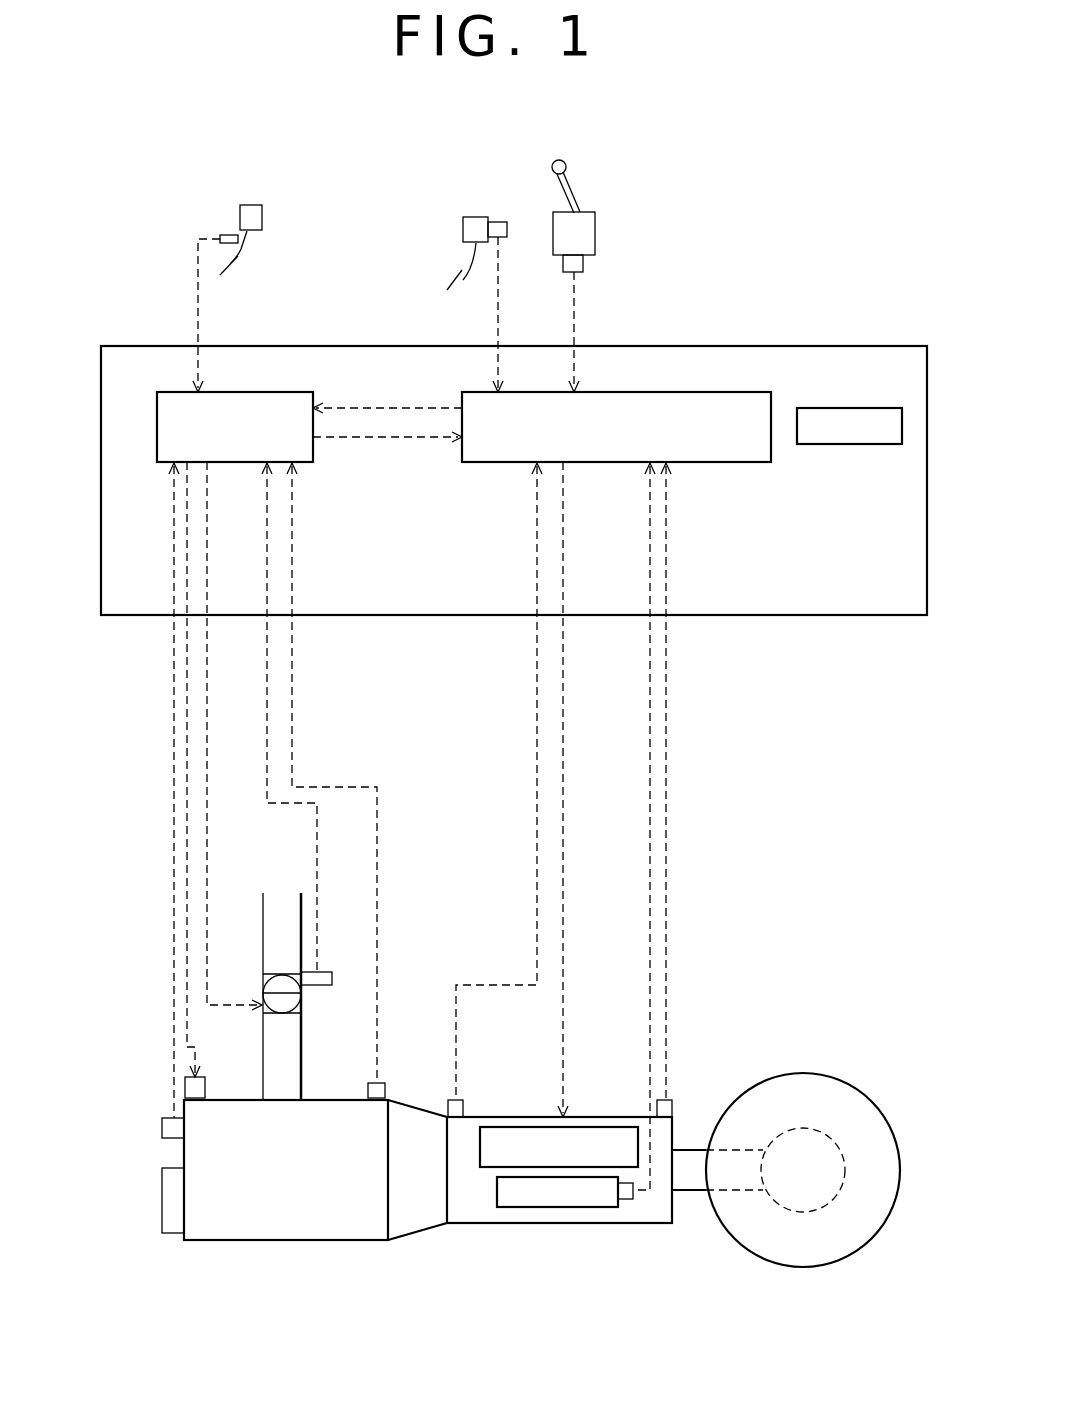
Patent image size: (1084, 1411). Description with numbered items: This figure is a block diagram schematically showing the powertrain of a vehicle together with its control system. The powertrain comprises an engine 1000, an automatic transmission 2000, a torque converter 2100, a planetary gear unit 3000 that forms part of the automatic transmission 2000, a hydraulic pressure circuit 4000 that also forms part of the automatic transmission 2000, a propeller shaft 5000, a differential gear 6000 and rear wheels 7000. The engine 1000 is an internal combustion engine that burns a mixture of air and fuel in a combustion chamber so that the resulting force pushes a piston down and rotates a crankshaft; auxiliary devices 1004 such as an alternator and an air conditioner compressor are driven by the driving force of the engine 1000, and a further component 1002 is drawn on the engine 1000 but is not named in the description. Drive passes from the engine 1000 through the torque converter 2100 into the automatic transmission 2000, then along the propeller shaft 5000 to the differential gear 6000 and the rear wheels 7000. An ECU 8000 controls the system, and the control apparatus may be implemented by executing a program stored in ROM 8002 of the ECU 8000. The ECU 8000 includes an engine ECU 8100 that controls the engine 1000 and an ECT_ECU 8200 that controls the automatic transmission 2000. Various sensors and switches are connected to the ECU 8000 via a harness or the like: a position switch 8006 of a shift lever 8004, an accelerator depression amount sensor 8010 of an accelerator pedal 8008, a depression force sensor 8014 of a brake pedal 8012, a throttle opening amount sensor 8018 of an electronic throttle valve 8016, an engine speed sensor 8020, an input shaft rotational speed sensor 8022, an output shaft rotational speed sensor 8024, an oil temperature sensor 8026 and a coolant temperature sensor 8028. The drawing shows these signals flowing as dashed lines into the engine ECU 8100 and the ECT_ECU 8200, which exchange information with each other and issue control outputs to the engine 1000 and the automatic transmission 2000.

The ECU 8000 is at (147, 346).
The ROM 8002 is at (858, 408).
The shift lever 8004 is at (577, 196).
The position switch 8006 is at (584, 262).
The accelerator pedal 8008 is at (247, 250).
The accelerator depression amount sensor 8010 is at (240, 225).
The brake pedal 8012 is at (472, 250).
The depression force sensor 8014 is at (500, 219).
The electronic throttle valve 8016 is at (265, 981).
The throttle opening amount sensor 8018 is at (302, 985).
The engine speed sensor 8020 is at (162, 1128).
The input shaft rotational speed sensor 8022 is at (465, 1110).
The output shaft rotational speed sensor 8024 is at (673, 1108).
The oil temperature sensor 8026 is at (623, 1200).
The coolant temperature sensor 8028 is at (390, 1088).
The engine ECU 8100 is at (298, 392).
The ECT_ECU 8200 is at (747, 392).
The engine 1000 is at (287, 1242).
The injector 1002 is at (207, 1087).
The auxiliary devices 1004 is at (162, 1198).
The automatic transmission 2000 is at (490, 1225).
The torque converter 2100 is at (417, 1240).
The planetary gear unit 3000 is at (607, 1127).
The hydraulic pressure circuit 4000 is at (530, 1208).
The propeller shaft 5000 is at (688, 1192).
The differential gear 6000 is at (817, 1128).
The rear wheels 7000 is at (802, 1267).